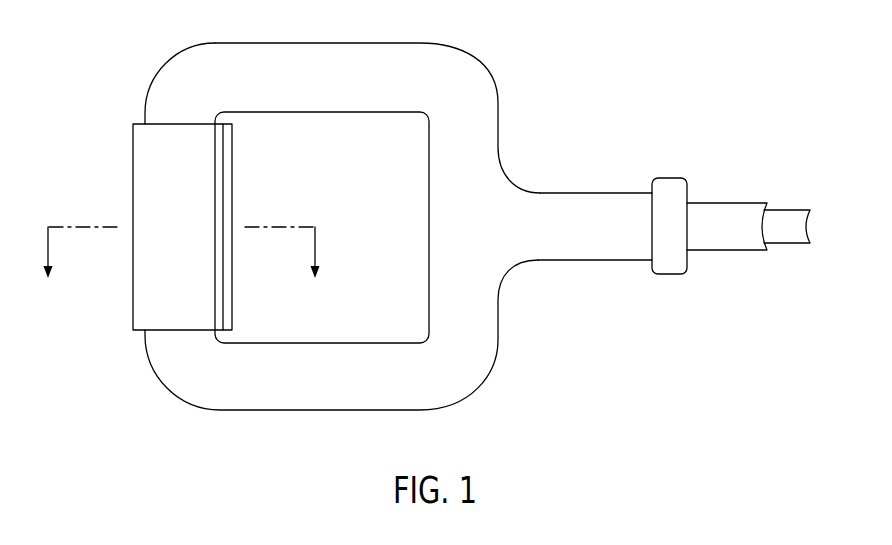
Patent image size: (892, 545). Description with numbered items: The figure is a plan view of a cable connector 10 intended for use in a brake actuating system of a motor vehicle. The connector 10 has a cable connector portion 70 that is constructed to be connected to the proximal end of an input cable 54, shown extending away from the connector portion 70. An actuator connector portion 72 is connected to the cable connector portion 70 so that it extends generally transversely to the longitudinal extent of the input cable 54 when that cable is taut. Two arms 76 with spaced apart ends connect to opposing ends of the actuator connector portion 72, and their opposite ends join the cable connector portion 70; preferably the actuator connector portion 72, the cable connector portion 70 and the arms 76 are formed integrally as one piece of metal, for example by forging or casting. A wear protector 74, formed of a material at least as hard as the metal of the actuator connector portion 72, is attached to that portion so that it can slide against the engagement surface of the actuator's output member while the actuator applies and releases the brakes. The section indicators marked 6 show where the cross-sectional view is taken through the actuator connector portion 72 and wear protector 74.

The cable connector 10 is at (108, 411).
The section line 6- 6 is at (181, 270).
The input cable 54 is at (732, 222).
The cable connector portion 70 is at (573, 203).
The actuator connector portion 72 is at (167, 105).
The wear protector 74 is at (150, 194).
The arms 76 is at (335, 58).